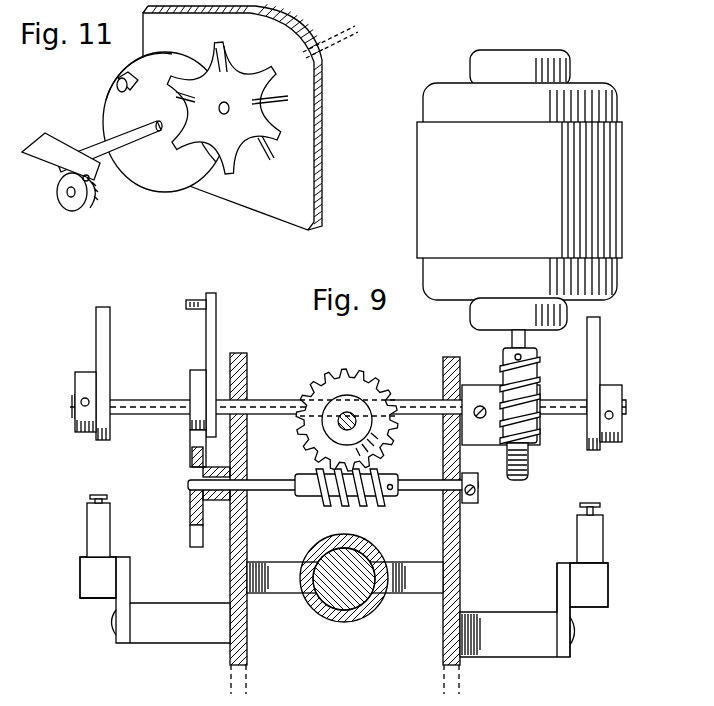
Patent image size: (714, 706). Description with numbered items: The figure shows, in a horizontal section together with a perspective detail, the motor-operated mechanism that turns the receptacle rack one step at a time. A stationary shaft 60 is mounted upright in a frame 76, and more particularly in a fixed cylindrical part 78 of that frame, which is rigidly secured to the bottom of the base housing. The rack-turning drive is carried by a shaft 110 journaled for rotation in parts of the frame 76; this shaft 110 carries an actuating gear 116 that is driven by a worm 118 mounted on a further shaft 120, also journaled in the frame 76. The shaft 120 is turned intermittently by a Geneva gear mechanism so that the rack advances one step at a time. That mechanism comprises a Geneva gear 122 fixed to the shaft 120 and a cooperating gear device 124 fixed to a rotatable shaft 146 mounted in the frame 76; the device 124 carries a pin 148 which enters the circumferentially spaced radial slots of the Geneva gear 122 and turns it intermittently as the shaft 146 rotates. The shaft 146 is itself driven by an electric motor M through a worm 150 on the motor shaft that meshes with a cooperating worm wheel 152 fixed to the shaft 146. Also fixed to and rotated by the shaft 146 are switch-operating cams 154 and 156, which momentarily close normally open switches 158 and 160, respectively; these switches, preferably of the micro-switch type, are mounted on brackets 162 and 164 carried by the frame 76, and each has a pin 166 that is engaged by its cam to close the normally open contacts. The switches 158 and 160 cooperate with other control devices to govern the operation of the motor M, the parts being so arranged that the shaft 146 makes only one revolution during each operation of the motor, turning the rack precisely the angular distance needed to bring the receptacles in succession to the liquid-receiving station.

In FIG. 9, the electric motor M is at (622, 203).
In FIG. 9, the stationary shaft 60 is at (352, 594).
In FIG. 11, the frame 76 is at (282, 228).
In FIG. 9, the frame 76 is at (465, 566).
In FIG. 9, the fixed cylindrical part 78 is at (318, 612).
In FIG. 9, the shaft 110 is at (341, 414).
In FIG. 9, the actuating gear 116 is at (366, 380).
In FIG. 9, the worm 118 is at (312, 498).
In FIG. 11, the shaft 120 is at (326, 52).
In FIG. 9, the shaft 120 is at (418, 492).
In FIG. 11, the Geneva gear 122 is at (232, 154).
In FIG. 9, the Geneva gear 122 is at (190, 507).
In FIG. 11, the cooperating gear device 124 is at (165, 196).
In FIG. 9, the cooperating gear device 124 is at (218, 338).
In FIG. 11, the rotatable shaft 146 is at (112, 188).
In FIG. 9, the rotatable shaft 146 is at (280, 399).
In FIG. 11, the pin 148 is at (117, 86).
In FIG. 9, the pin 148 is at (197, 300).
In FIG. 9, the worm 150 is at (536, 432).
In FIG. 9, the worm wheel 152 is at (519, 474).
In FIG. 11, the cam 154 is at (44, 156).
In FIG. 9, the cam 154 is at (96, 338).
In FIG. 9, the cam 156 is at (600, 368).
In FIG. 9, the switch 158 is at (78, 578).
In FIG. 9, the switch 160 is at (612, 578).
In FIG. 9, the bracket 162 is at (170, 638).
In FIG. 9, the bracket 164 is at (520, 644).
In FIG. 9, the pin 166 is at (90, 500).